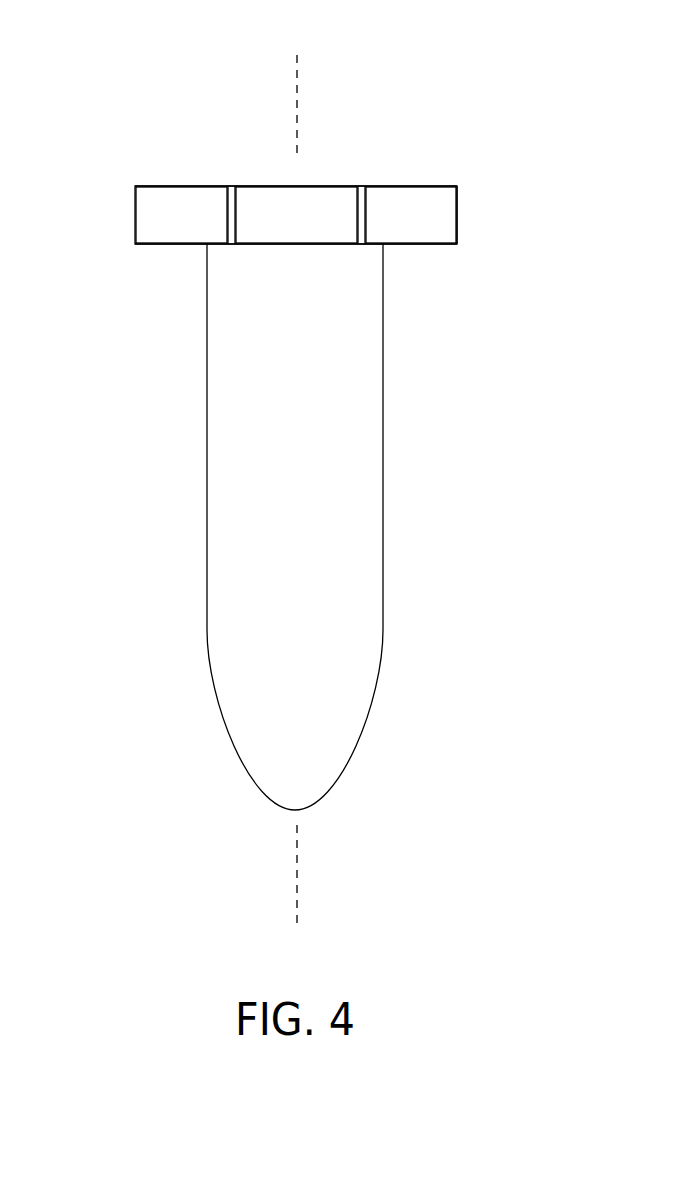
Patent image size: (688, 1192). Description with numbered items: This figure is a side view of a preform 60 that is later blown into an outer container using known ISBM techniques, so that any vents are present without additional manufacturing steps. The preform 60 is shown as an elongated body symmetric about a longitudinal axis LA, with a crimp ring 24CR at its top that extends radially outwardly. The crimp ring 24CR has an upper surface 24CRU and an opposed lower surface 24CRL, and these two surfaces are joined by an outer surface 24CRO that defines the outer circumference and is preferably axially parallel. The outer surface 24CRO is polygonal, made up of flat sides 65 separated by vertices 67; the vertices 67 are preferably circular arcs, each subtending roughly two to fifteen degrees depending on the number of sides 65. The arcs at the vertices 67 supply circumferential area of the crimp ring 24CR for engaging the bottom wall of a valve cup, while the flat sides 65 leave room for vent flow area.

The longitudinal axis LA is at (297, 483).
The preform 60 is at (442, 530).
The crimp ring 24CR is at (130, 185).
The upper surface 24CRU is at (430, 187).
The outer surface 24CRO is at (457, 212).
The lower surface 24CRL is at (420, 245).
The vertices 67 is at (232, 186).
The sides 65 is at (198, 232).